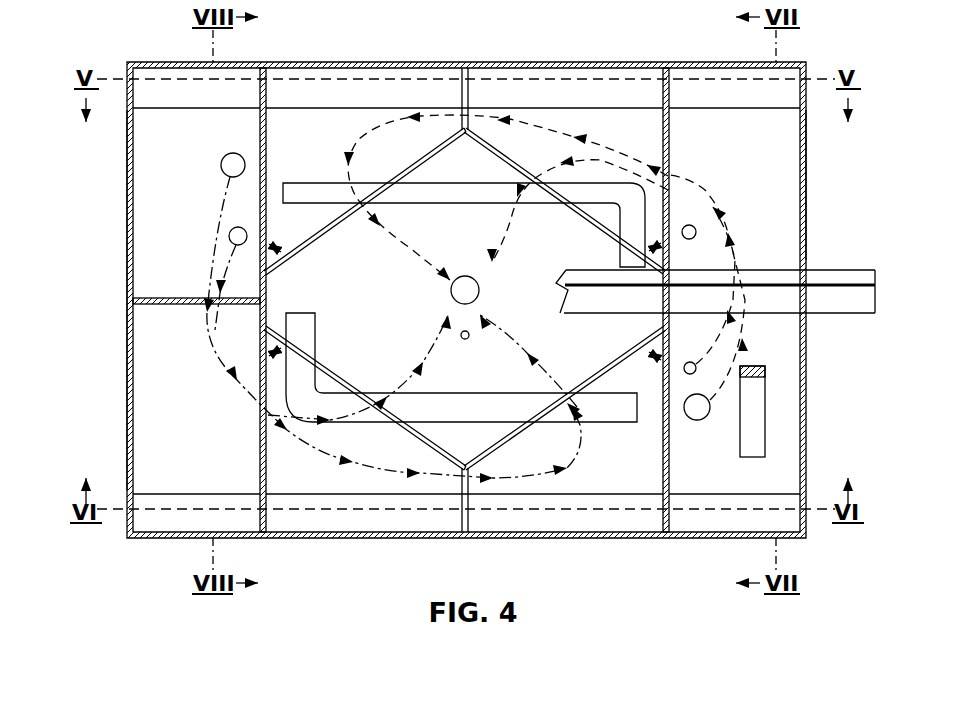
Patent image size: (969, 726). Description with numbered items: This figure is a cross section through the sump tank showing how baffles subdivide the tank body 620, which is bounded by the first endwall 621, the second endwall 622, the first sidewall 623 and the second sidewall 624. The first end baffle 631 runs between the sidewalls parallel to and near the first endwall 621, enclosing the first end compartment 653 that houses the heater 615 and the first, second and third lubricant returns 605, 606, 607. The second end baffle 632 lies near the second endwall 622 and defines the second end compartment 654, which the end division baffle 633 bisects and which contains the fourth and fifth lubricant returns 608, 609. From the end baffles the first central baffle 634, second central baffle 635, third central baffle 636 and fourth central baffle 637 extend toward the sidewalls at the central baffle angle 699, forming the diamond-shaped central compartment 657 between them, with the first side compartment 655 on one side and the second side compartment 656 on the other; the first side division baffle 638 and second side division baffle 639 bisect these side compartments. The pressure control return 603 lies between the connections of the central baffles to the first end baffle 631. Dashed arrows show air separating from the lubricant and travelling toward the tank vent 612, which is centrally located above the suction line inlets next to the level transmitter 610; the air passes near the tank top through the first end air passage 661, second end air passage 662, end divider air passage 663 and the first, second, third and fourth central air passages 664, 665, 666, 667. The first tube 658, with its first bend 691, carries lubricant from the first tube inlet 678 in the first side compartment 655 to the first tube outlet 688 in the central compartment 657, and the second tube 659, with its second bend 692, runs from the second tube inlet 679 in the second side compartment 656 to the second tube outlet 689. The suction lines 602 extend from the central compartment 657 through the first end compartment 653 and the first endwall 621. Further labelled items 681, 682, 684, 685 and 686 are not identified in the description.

The suction lines 602 is at (870, 275).
The pressure control return 603 is at (415, 370).
The first lubricant return 605 is at (710, 410).
The second lubricant return 606 is at (745, 368).
The third lubricant return 607 is at (697, 232).
The fourth lubricant return 608 is at (222, 162).
The fifth lubricant return 609 is at (230, 232).
The level transmitter 610 is at (466, 341).
The tank vent 612 is at (465, 276).
The heater 615 is at (752, 420).
The tank body 620 is at (795, 62).
The first endwall 621 is at (806, 180).
The second endwall 622 is at (128, 168).
The first sidewall 623 is at (536, 62).
The second sidewall 624 is at (562, 538).
The first end baffle 631 is at (716, 352).
The second end baffle 632 is at (262, 360).
The end division baffle 633 is at (132, 322).
The first central baffle 634 is at (507, 152).
The second central baffle 635 is at (425, 152).
The third central baffle 636 is at (422, 440).
The fourth central baffle 637 is at (525, 430).
The first side division baffle 638 is at (460, 92).
The second side division baffle 639 is at (460, 505).
The first end compartment 653 is at (806, 245).
The second end compartment 654 is at (132, 355).
The first side compartment 655 is at (494, 62).
The second side compartment 656 is at (498, 488).
The central compartment 657 is at (445, 215).
The first tube 658 is at (310, 190).
The second tube 659 is at (594, 410).
The first end air passage 661 is at (668, 160).
The second end air passage 662 is at (262, 432).
The end divider air passage 663 is at (172, 300).
The first central air passage 664 is at (648, 185).
The second central air passage 665 is at (352, 215).
The third central air passage 666 is at (347, 384).
The fourth central air passage 667 is at (577, 392).
The first tube inlet 678 is at (262, 168).
The second tube inlet 679 is at (668, 428).
The flow path 681 is at (245, 395).
The outlet duct 682 is at (480, 482).
The flow path 684 is at (688, 192).
The flow path 685 is at (497, 240).
The flow path 686 is at (387, 118).
The first tube outlet 688 is at (617, 279).
The second tube outlet 689 is at (302, 312).
The first bend 691 is at (670, 170).
The second bend 692 is at (296, 412).
The central baffle angle 699 is at (275, 246).